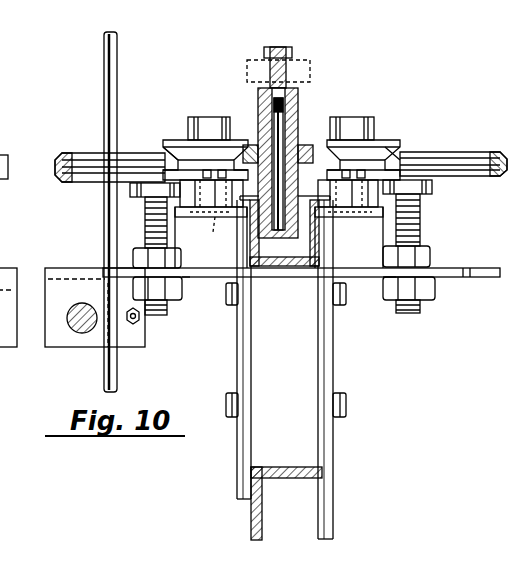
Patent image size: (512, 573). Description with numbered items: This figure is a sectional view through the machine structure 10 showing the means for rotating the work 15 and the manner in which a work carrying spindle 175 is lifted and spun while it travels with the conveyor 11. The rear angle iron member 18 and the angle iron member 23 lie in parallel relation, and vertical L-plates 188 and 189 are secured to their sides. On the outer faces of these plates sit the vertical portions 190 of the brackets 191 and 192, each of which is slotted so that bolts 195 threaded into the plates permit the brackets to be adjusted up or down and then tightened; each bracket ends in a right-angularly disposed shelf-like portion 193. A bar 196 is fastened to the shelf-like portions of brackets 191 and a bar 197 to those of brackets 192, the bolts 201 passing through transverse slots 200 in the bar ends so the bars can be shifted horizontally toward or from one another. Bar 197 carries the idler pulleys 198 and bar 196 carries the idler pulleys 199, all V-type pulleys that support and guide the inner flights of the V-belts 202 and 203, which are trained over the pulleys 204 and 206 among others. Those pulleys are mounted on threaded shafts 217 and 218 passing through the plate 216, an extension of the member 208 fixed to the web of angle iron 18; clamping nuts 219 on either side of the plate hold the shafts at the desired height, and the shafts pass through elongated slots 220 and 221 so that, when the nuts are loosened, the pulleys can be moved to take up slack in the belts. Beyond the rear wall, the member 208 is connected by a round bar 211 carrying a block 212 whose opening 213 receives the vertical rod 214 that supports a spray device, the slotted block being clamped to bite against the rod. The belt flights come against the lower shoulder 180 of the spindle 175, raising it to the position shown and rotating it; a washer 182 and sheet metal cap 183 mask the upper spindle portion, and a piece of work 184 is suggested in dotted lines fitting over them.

The structure 10 is at (303, 505).
The conveyor 11 is at (221, 230).
The means for rotating the work 15 is at (348, 100).
The angle iron member 18 is at (306, 268).
The angle iron member 23 is at (262, 530).
The work carrying spindle 175 is at (256, 110).
The lower shoulder 180 is at (290, 130).
The washer 182 is at (297, 96).
The sheet metal cap 183 is at (262, 72).
The piece of work 184 is at (290, 52).
The L-plate 188 is at (255, 384).
The L-plate 189 is at (316, 390).
The vertical portion 190 is at (238, 442).
The bracket 191 is at (236, 474).
The bracket 192 is at (336, 478).
The shelf-like portion 193 is at (200, 207).
The bolt 195 is at (226, 300).
The bar 196 is at (209, 225).
The bar 197 is at (345, 217).
The idler pulley 198 is at (385, 140).
The idler pulley 199 is at (178, 140).
The transverse slot 200 is at (279, 237).
The bolt 201 is at (165, 150).
The belt 202 is at (503, 178).
The belt 203 is at (12, 153).
The pulley 204 is at (462, 152).
The pulley 206 is at (72, 152).
The member 208 is at (493, 278).
The round bar 211 is at (80, 334).
The block 212 is at (62, 348).
The opening 213 is at (106, 350).
The vertical rod 214 is at (120, 375).
The plate 216 is at (468, 278).
The threaded shaft 217 is at (420, 224).
The threaded shaft 218 is at (145, 214).
The clamping nut 219 is at (133, 260).
The elongated slot 220 is at (383, 280).
The elongated slot 221 is at (182, 282).